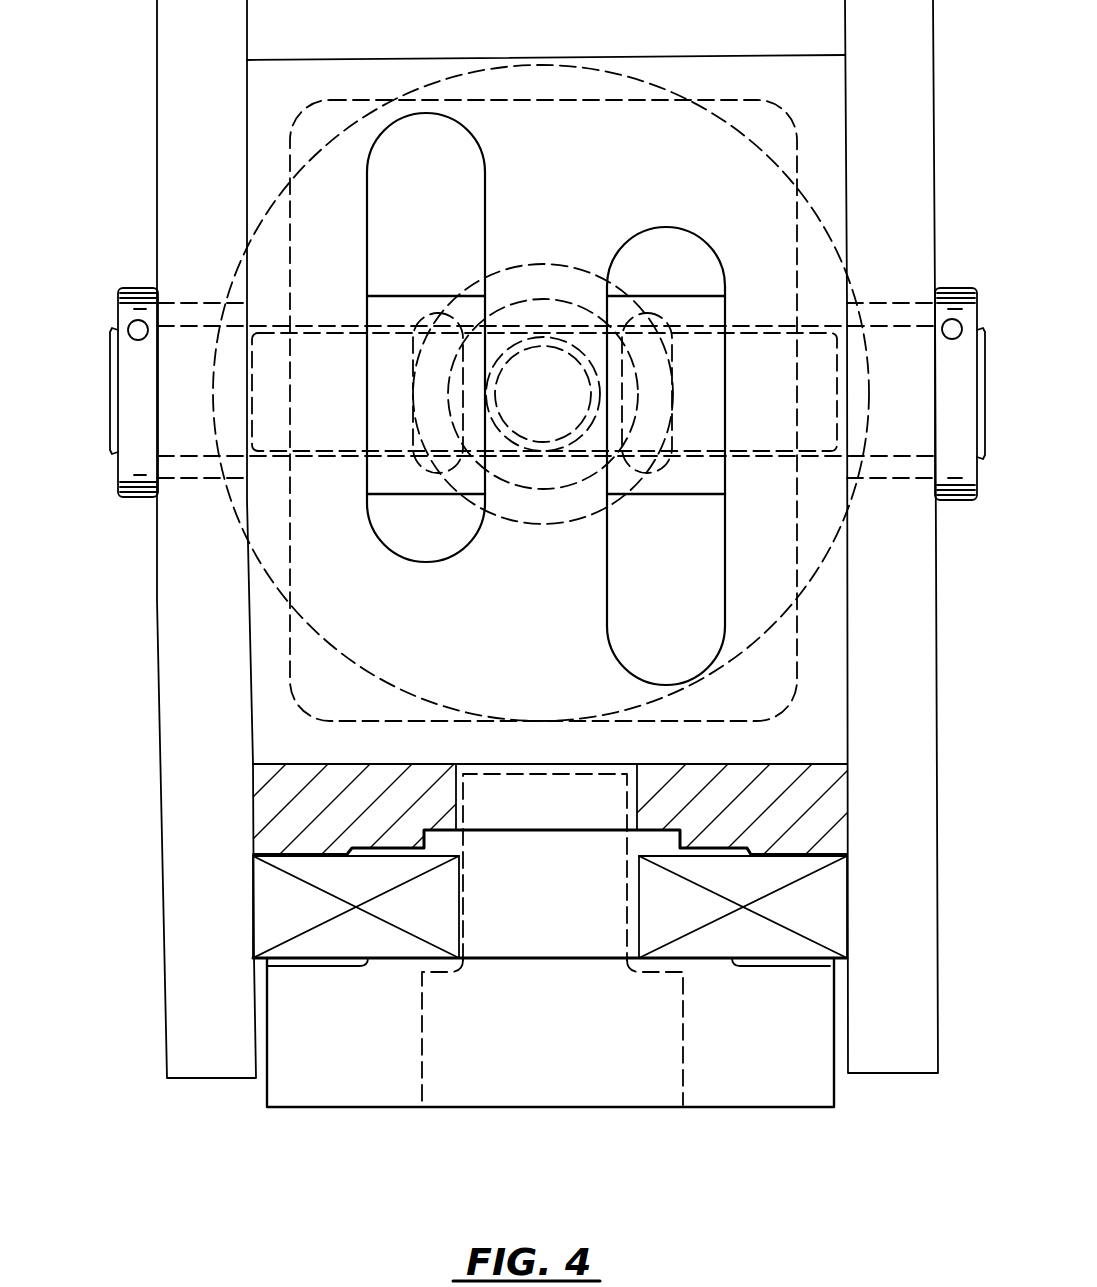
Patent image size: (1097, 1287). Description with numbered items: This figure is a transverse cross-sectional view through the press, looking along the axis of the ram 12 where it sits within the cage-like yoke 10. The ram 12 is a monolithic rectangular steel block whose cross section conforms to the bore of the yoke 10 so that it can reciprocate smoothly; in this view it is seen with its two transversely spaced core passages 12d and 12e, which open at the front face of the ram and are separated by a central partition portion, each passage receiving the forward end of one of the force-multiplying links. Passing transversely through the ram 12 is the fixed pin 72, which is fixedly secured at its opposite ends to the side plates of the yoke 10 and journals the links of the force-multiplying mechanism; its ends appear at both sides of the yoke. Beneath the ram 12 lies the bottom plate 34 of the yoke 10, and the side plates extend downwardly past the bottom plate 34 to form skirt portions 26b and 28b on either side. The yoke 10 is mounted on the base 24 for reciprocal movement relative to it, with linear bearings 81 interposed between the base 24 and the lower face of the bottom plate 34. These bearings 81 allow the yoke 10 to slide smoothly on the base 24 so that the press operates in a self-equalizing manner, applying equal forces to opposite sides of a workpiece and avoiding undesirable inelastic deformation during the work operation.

The yoke 10 is at (142, 61).
The ram 12 is at (272, 105).
The core passage 12d is at (486, 204).
The core passage 12e is at (710, 278).
The fixed pin 72 is at (108, 350).
The bottom plate 34 is at (742, 762).
The linear bearings 81 is at (835, 878).
The base 24 is at (797, 1092).
The skirt portion 26b is at (168, 1055).
The skirt portion 28b is at (888, 1048).